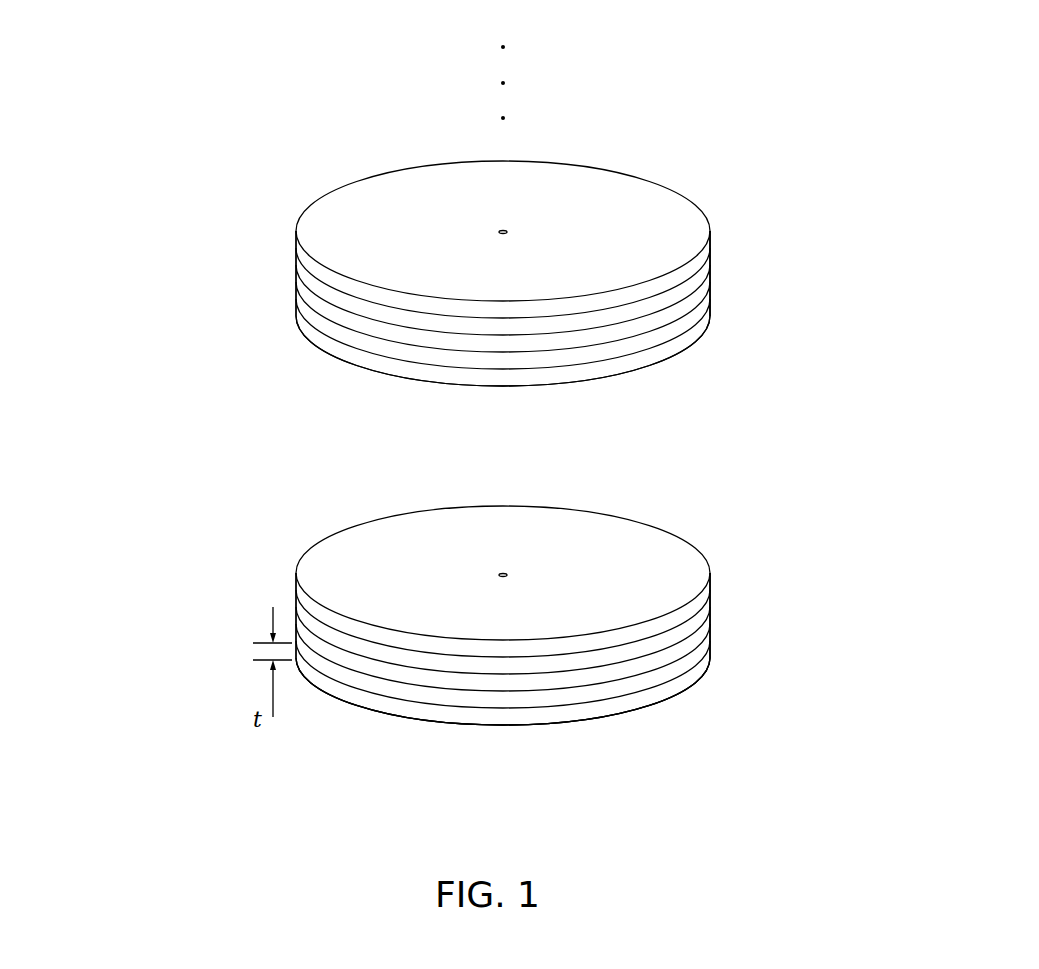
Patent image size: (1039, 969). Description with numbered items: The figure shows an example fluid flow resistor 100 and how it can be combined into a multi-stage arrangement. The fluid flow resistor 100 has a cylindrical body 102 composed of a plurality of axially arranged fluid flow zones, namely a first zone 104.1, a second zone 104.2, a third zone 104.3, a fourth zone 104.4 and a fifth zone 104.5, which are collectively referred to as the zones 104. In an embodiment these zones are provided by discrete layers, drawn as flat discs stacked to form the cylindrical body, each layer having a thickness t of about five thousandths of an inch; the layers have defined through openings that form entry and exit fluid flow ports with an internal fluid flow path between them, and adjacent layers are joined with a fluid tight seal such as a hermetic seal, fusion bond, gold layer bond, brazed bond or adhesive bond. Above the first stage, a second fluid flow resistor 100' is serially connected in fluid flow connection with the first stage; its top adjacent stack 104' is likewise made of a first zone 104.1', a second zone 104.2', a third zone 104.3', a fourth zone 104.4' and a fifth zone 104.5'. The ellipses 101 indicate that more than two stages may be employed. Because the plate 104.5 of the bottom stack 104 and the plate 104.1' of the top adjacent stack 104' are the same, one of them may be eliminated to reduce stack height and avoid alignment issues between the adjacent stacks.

The fluid flow resistor 100 is at (420, 615).
The second fluid flow resistor 100' is at (420, 273).
The ellipses 101 is at (480, 38).
The cylindrical body 102 is at (699, 713).
The fluid flow zones 104 is at (864, 629).
The top adjacent stack 104' is at (866, 275).
The first zone 104.1 is at (566, 683).
The second zone 104.2 is at (566, 666).
The third zone 104.3 is at (577, 649).
The fourth zone 104.4 is at (566, 623).
The fifth zone 104.5 is at (566, 592).
The first zone of second stage 104.1' is at (569, 342).
The second zone of second stage 104.2' is at (569, 325).
The third zone of second stage 104.3' is at (580, 308).
The fourth zone of second stage 104.4' is at (569, 283).
The fifth zone of second stage 104.5' is at (569, 251).